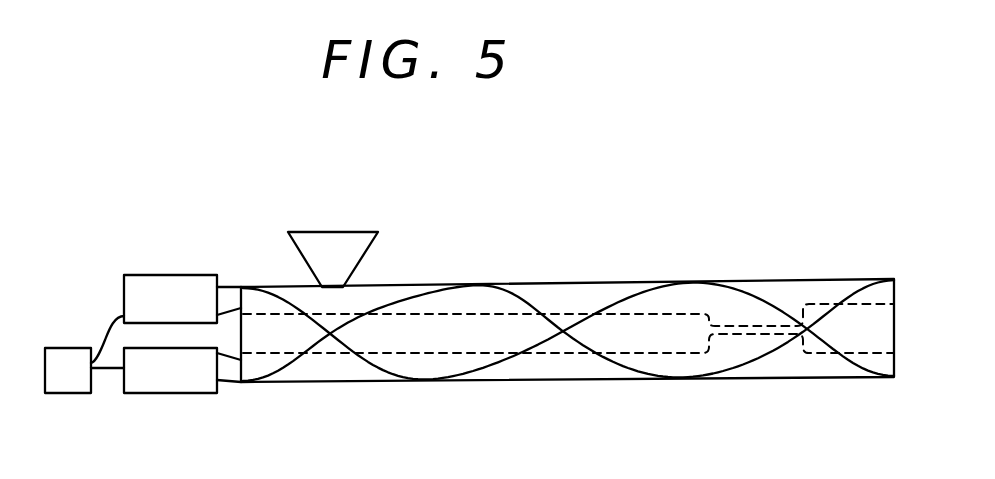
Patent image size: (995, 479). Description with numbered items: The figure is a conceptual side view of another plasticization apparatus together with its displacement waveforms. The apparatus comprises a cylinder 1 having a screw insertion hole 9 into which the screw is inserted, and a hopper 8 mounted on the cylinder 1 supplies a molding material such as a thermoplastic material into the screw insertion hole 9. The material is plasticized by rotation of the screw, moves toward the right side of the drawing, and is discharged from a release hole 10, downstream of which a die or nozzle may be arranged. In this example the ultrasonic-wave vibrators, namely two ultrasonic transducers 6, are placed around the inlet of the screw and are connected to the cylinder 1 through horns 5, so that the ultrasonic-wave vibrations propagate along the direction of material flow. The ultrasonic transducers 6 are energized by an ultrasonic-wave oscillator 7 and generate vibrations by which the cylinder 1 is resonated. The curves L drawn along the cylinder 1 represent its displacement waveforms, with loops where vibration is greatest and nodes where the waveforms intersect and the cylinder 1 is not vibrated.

The cylinder 1 is at (582, 283).
The horn 5 is at (225, 293).
The ultrasonic transducer 6 is at (163, 283).
The ultrasonic-wave oscillator 7 is at (75, 388).
The hopper 8 is at (343, 242).
The screw insertion hole 9 is at (443, 342).
The release hole 10 is at (800, 335).
The curves L is at (600, 314).